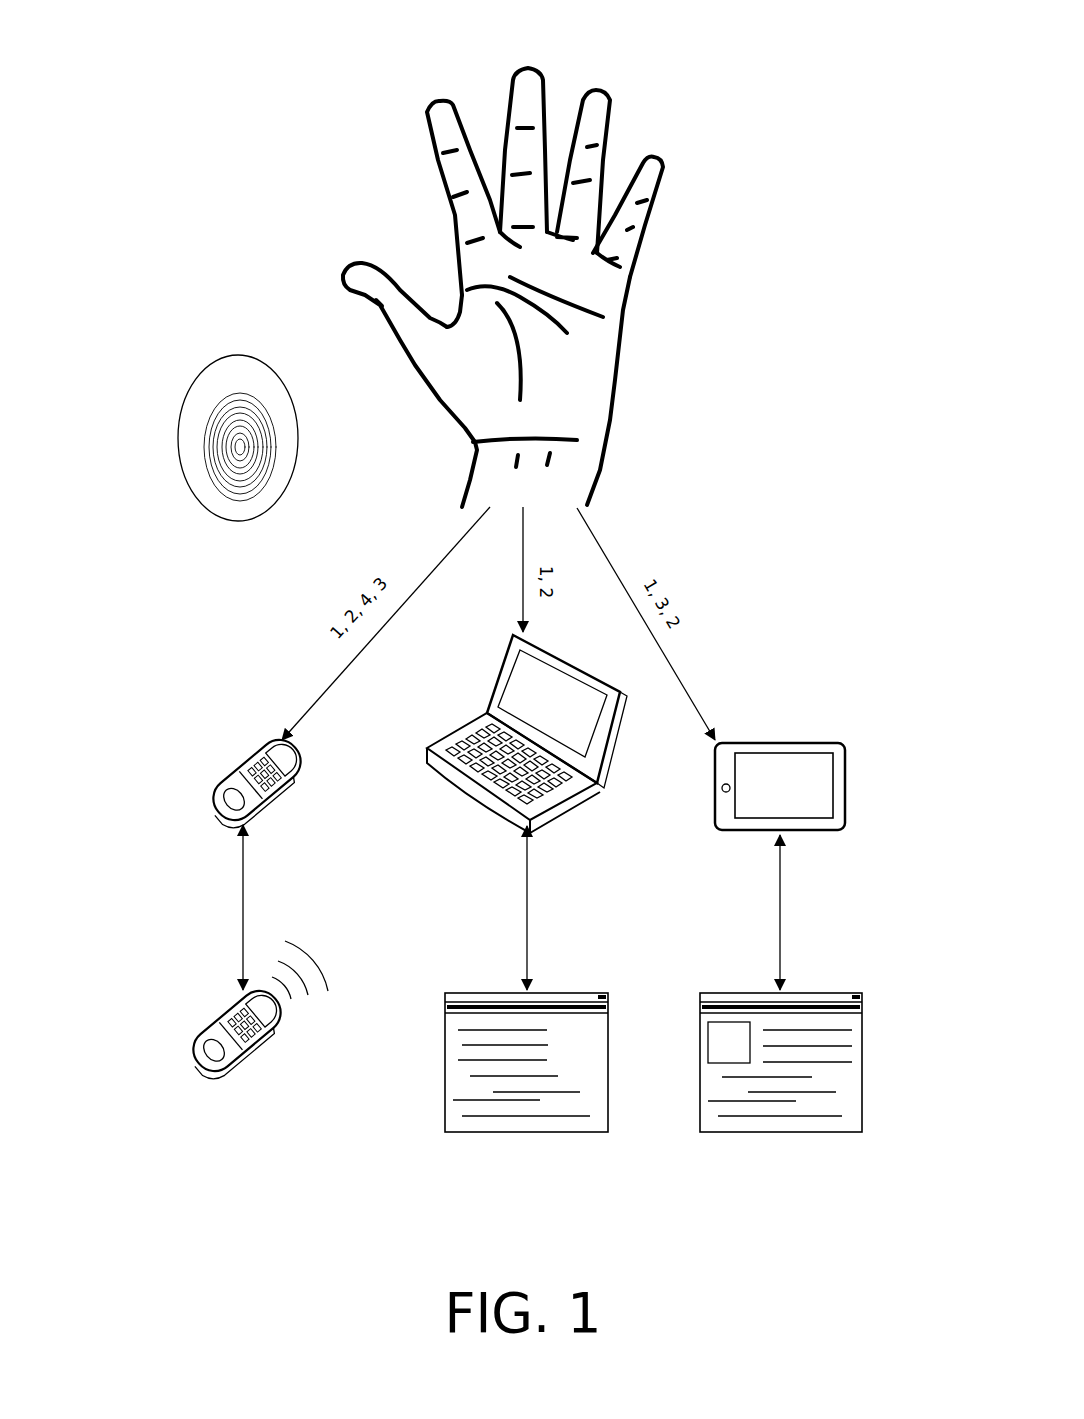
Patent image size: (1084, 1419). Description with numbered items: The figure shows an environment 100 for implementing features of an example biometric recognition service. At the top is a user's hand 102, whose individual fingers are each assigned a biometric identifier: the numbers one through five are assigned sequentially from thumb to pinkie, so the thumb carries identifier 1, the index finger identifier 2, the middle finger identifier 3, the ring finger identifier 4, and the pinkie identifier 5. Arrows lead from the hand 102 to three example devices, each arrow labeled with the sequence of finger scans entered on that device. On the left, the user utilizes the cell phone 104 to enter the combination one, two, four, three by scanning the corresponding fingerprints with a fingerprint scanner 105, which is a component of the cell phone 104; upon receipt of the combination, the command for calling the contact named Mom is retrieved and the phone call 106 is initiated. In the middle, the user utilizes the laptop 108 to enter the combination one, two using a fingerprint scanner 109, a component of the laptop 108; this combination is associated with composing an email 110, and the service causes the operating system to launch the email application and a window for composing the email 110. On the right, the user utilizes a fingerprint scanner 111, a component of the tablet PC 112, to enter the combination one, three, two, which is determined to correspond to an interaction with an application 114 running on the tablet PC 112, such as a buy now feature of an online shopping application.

The system 100 is at (793, 1280).
The hand 102 is at (627, 303).
The thumb identifier 1 is at (280, 372).
The index finger identifier 2 is at (451, 165).
The middle finger identifier 3 is at (525, 124).
The ring finger identifier 4 is at (594, 140).
The pinkie identifier 5 is at (650, 192).
The cell phone 104 is at (240, 780).
The fingerprint scanner 105 is at (217, 797).
The phone call 106 is at (203, 1037).
The laptop 108 is at (473, 720).
The fingerprint scanner 109 is at (520, 800).
The email 110 is at (490, 990).
The fingerprint scanner 111 is at (725, 820).
The tablet PC 112 is at (780, 742).
The application 114 is at (745, 990).